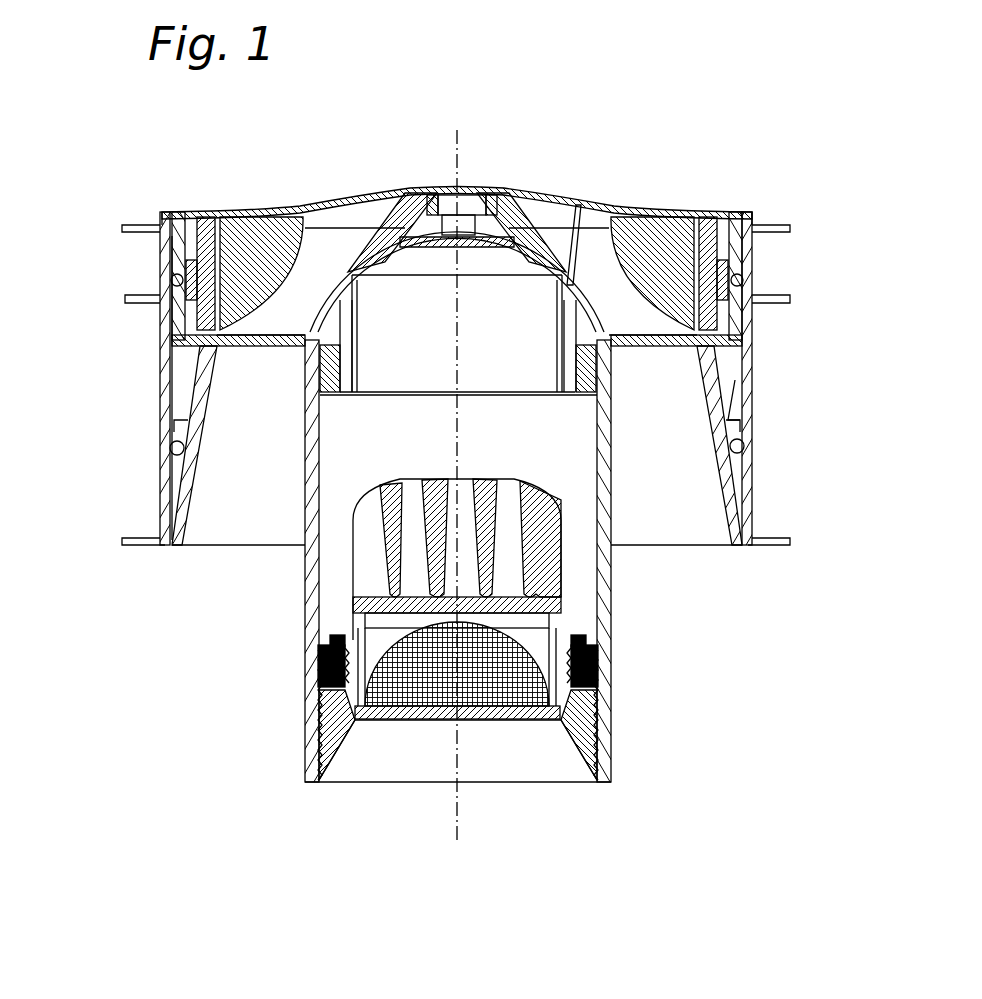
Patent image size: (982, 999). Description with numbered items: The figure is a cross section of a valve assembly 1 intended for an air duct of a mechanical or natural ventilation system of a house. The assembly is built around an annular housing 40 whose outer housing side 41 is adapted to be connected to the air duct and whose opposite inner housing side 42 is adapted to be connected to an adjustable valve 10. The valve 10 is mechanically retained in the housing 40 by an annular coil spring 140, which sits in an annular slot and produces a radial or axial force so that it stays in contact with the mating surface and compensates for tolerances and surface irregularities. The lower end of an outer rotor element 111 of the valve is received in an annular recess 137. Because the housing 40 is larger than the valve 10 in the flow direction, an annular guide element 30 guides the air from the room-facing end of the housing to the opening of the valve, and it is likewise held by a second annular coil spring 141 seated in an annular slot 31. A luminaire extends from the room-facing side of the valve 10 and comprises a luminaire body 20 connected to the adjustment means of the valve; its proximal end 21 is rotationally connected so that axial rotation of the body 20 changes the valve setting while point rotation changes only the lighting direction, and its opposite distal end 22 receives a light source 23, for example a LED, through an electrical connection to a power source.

The valve assembly 1 is at (655, 134).
The adjustable valve 10 is at (531, 178).
The luminaire body 20 is at (612, 698).
The proximal end 21 is at (598, 276).
The distal end 22 is at (514, 800).
The light source 23 is at (600, 660).
The annular guide element 30 is at (735, 486).
The annular slot 31 is at (746, 440).
The annular housing 40 is at (752, 348).
The outer housing side 41 is at (144, 432).
The inner housing side 42 is at (185, 498).
The outer rotor element 111 is at (176, 272).
The annular recess 137 is at (187, 326).
The annular coil spring 140 is at (744, 276).
The annular coil spring 141 is at (746, 445).